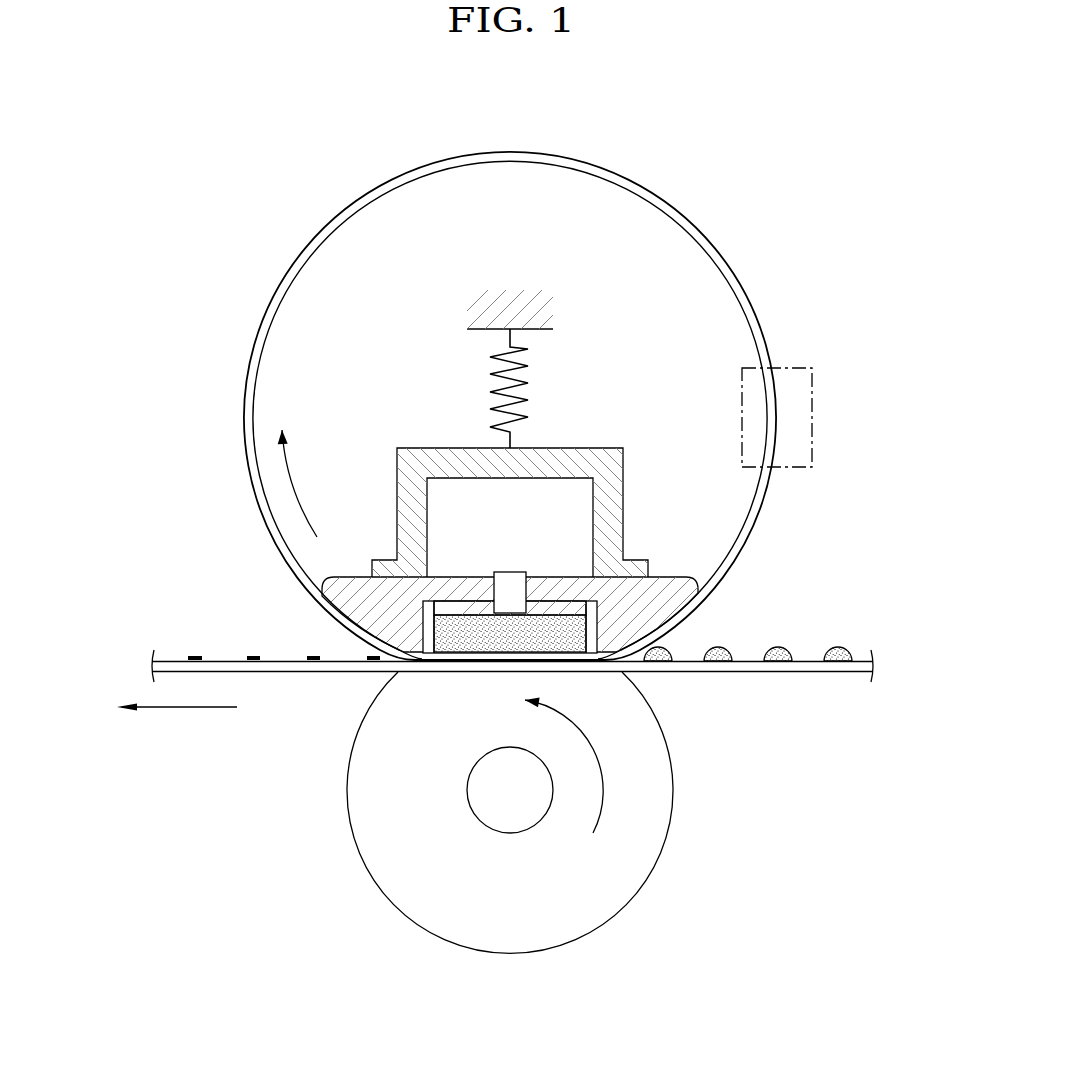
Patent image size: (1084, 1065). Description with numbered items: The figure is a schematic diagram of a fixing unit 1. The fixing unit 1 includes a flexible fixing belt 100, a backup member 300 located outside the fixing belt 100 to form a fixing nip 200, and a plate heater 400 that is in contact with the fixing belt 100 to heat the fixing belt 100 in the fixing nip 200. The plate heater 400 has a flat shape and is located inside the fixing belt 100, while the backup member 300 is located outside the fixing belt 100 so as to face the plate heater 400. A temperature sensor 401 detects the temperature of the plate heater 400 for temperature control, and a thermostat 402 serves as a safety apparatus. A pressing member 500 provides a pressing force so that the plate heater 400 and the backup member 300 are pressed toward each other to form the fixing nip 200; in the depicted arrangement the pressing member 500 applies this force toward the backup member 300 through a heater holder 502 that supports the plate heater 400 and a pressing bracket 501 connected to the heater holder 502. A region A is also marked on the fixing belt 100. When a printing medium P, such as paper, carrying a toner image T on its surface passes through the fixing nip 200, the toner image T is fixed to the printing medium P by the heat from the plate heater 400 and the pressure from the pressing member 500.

The fixing unit 1 is at (758, 197).
The fixing belt 100 is at (767, 340).
The fixing nip 200 is at (487, 673).
The backup member 300 is at (655, 867).
The plate heater 400 is at (457, 637).
The temperature sensor 401 is at (455, 608).
The thermostat 402 is at (510, 577).
The pressing member 500 is at (528, 383).
The pressing bracket 501 is at (614, 487).
The heater holder 502 is at (668, 583).
The region A is at (813, 387).
The toner image T is at (842, 650).
The printing medium P is at (812, 673).